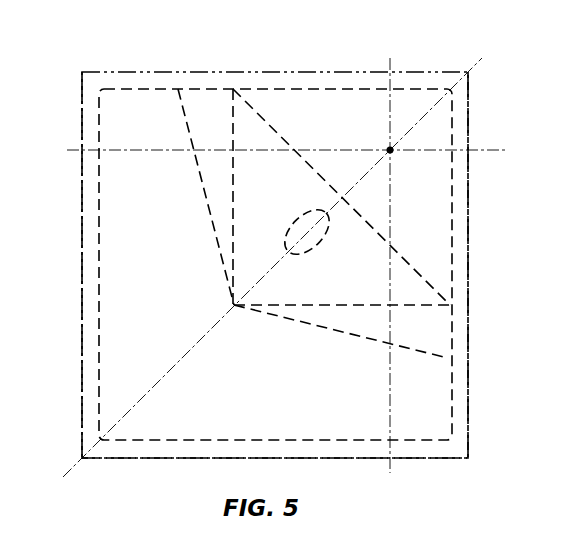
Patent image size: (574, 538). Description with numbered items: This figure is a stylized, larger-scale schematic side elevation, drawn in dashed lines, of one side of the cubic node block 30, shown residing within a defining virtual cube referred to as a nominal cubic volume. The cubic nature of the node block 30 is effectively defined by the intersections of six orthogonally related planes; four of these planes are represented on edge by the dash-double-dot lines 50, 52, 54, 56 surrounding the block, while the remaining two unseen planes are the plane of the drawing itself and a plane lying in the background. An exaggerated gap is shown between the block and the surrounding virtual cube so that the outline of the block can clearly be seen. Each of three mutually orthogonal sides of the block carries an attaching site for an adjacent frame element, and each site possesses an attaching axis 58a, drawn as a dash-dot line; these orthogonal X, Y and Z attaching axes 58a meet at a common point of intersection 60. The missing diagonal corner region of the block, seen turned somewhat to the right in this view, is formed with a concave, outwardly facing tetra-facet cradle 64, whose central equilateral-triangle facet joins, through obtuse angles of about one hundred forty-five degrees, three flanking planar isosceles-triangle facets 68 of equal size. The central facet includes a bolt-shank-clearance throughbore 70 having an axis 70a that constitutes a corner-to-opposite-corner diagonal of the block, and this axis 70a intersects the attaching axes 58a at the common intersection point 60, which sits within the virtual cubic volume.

The node block 30 is at (99, 236).
The dash-double-dot line 50 is at (325, 72).
The dash-double-dot line 52 is at (468, 320).
The dash-double-dot line 54 is at (188, 458).
The dash-double-dot line 56 is at (82, 318).
The attaching axis 58a is at (93, 147).
The common point of intersection 60 is at (392, 152).
The tetra-facet cradle 64 is at (266, 169).
The isosceles-triangle facet 68 is at (216, 110).
The throughbore 70 is at (326, 246).
The throughbore axis 70a is at (198, 340).